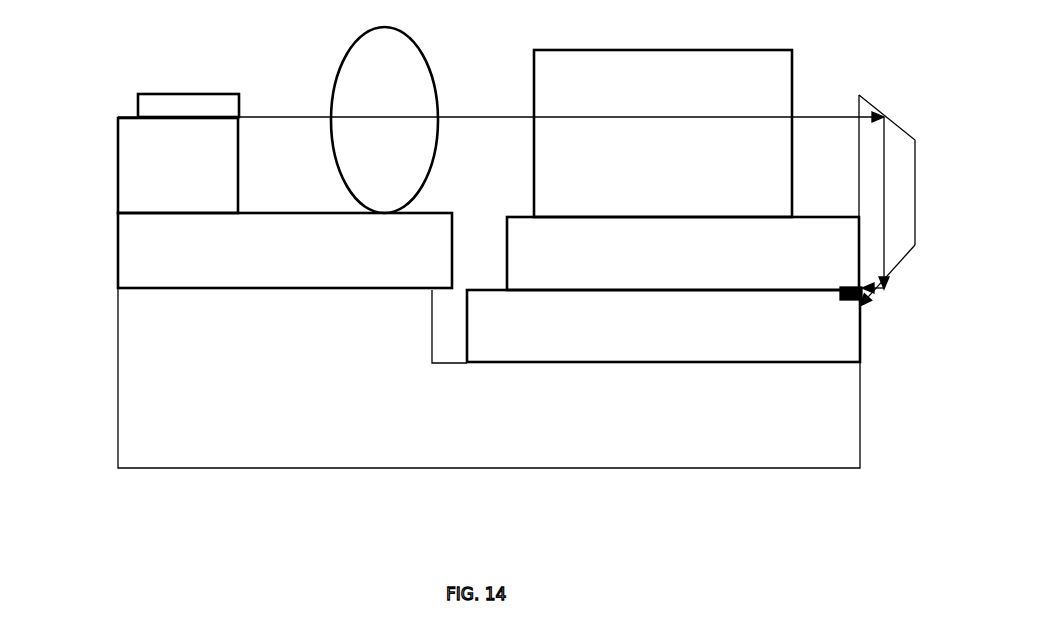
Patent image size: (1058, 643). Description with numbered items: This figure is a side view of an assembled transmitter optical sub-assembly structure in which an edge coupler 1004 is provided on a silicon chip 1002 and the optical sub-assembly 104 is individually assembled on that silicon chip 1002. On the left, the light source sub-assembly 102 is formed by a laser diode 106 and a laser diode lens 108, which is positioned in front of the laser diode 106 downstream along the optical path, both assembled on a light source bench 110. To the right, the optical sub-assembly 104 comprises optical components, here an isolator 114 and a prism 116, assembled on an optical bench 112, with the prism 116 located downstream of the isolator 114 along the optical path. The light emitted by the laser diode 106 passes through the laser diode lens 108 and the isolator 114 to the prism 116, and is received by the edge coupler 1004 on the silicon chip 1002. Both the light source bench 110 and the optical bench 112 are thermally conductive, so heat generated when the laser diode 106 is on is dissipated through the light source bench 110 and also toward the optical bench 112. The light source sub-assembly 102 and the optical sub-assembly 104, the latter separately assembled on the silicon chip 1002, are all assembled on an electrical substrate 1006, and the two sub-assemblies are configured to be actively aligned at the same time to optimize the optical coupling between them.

The light source sub-assembly 102 is at (173, 79).
The optical sub-assembly 104 is at (842, 89).
The laser diode 106 is at (154, 104).
The laser diode lens 108 is at (358, 82).
The light source bench 110 is at (188, 255).
The optical bench 112 is at (637, 266).
The isolator 114 is at (636, 72).
The prism 116 is at (909, 149).
The silicon chip 1002 is at (851, 350).
The edge coupler 1004 is at (867, 316).
The electrical substrate 1006 is at (181, 475).